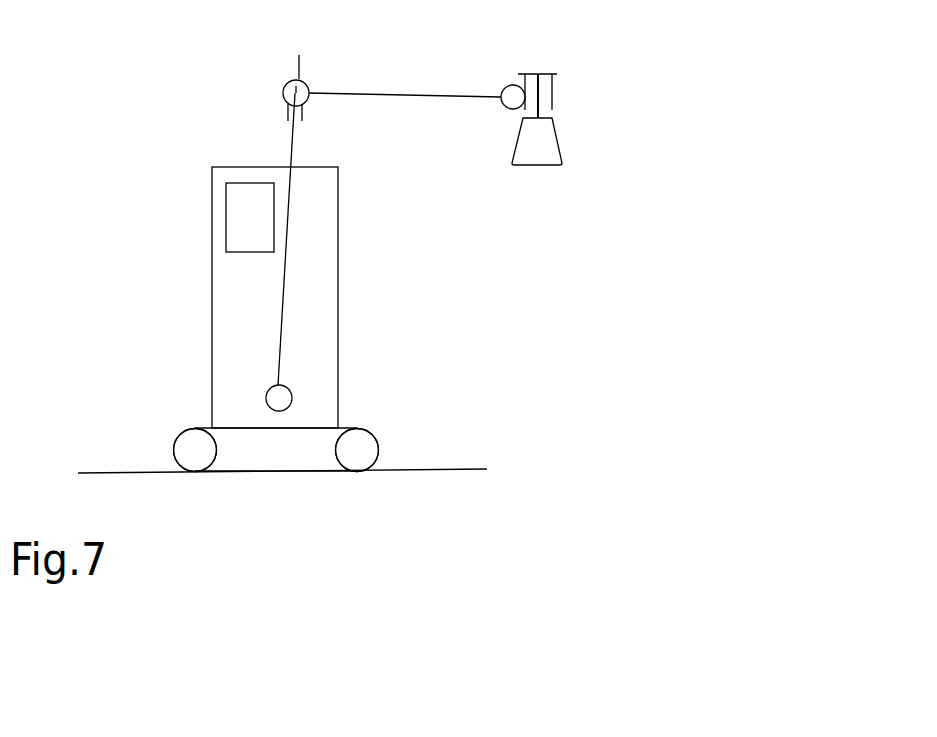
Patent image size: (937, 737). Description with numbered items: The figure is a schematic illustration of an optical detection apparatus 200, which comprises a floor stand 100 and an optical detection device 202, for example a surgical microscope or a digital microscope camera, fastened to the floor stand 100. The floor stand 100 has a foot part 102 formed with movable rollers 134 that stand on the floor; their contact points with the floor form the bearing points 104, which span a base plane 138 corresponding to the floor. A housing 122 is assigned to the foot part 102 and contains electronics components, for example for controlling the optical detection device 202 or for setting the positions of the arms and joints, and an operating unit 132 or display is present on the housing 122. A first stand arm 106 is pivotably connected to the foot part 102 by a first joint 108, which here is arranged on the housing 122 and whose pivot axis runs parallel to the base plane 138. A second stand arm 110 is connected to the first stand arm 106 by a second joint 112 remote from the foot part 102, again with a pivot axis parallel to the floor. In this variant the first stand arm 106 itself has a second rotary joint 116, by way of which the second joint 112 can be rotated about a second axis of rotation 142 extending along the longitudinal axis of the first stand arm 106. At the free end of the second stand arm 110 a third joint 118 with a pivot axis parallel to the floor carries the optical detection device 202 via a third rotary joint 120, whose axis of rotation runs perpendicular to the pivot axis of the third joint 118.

The floor stand 100 is at (258, 94).
The foot part 102 is at (342, 427).
The bearing points 104 is at (193, 472).
The first stand arm 106 is at (287, 293).
The first joint 108 is at (280, 402).
The second stand arm 110 is at (418, 93).
The second joint 112 is at (305, 80).
The second rotary joint 116 is at (288, 115).
The third joint 118 is at (507, 85).
The third rotary joint 120 is at (545, 95).
The housing 122 is at (225, 313).
The operating unit 132 is at (242, 223).
The rollers 134 is at (185, 445).
The base plane 138 is at (268, 473).
The second axis of rotation 142 is at (293, 73).
The optical detection apparatus 200 is at (623, 51).
The optical detection device 202 is at (542, 143).